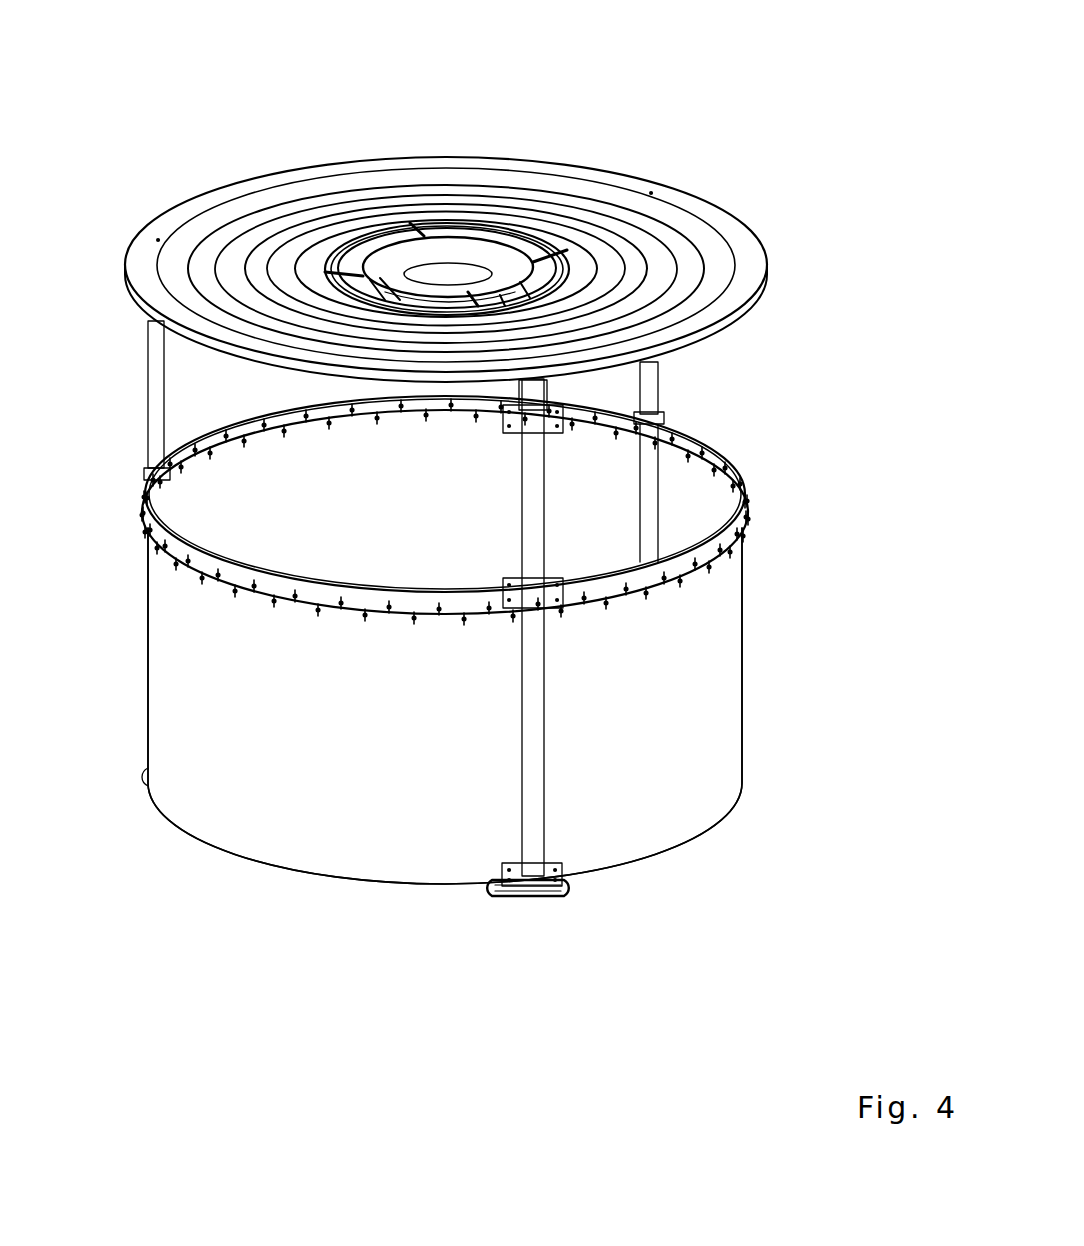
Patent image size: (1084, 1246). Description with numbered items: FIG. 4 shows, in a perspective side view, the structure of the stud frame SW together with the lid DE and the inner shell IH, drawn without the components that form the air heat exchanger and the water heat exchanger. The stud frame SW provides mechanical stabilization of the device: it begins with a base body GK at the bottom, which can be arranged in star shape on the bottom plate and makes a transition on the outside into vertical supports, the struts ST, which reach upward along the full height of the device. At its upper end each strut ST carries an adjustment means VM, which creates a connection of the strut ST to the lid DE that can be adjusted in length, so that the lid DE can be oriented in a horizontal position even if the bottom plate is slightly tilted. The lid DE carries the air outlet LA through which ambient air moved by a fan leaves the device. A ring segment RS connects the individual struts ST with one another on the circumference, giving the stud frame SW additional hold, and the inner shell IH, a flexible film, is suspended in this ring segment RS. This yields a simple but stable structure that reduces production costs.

The lid DE is at (690, 268).
The air outlet LA is at (553, 243).
The vertical support ST is at (162, 395).
The adjustment means VM is at (547, 383).
The ring segment RS is at (735, 455).
The inner shell IH is at (705, 678).
The stud frame SW is at (620, 787).
The base body GK is at (572, 895).